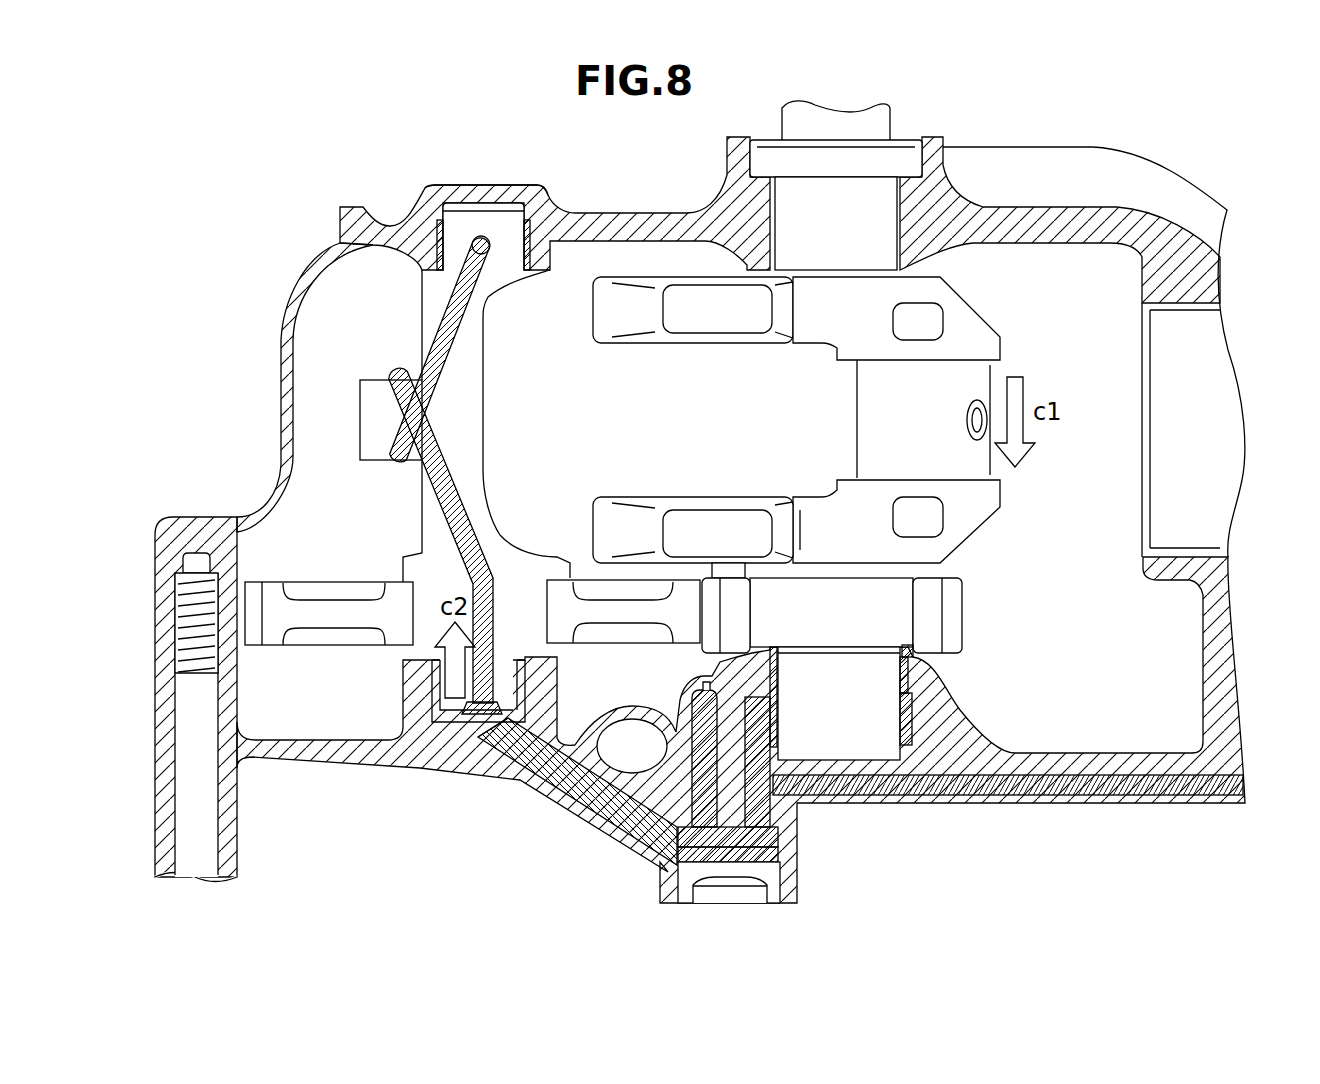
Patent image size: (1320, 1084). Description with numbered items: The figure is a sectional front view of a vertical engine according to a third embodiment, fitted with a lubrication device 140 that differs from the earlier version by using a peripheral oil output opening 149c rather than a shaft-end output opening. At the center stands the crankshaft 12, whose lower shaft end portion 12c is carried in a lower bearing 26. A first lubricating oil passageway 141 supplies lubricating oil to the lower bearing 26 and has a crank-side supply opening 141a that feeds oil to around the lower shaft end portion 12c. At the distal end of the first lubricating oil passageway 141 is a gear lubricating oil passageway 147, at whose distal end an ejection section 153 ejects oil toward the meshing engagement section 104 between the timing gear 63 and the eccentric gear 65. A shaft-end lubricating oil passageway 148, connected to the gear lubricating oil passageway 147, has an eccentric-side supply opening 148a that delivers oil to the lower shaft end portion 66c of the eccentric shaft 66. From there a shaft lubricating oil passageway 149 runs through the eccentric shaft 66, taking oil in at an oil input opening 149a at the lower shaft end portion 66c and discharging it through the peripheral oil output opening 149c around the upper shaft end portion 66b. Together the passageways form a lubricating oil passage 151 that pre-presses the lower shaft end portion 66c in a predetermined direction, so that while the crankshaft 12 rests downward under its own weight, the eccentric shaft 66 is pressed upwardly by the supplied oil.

The lubrication device 140 is at (296, 132).
The upper shaft end portion 66b is at (453, 222).
The eccentric shaft 66 is at (517, 208).
The peripheral oil output opening 149c is at (480, 235).
The crankshaft 12 is at (827, 170).
The ejection section 153 is at (700, 680).
The meshing engagement section 104 is at (710, 590).
The shaft lubricating oil passageway 149 is at (444, 520).
The lower bearing 26 is at (905, 660).
The eccentric gear 65 is at (363, 647).
The lower shaft end portion 66c is at (457, 725).
The oil input opening 149a is at (487, 722).
The eccentric-side supply opening 148a is at (518, 745).
The shaft-end lubricating oil passageway 148 is at (601, 810).
The lubricating oil passage 151 is at (633, 857).
The gear lubricating oil passageway 147 is at (707, 790).
The crank-side supply opening 141a is at (730, 852).
The first lubricating oil passageway 141 is at (1073, 787).
The lower shaft end portion 12c is at (828, 730).
The timing gear 63 is at (928, 657).